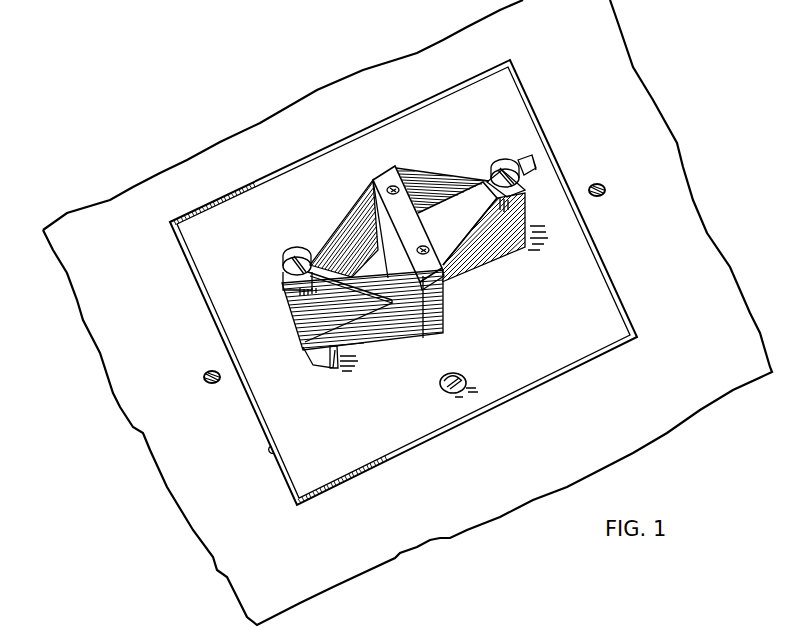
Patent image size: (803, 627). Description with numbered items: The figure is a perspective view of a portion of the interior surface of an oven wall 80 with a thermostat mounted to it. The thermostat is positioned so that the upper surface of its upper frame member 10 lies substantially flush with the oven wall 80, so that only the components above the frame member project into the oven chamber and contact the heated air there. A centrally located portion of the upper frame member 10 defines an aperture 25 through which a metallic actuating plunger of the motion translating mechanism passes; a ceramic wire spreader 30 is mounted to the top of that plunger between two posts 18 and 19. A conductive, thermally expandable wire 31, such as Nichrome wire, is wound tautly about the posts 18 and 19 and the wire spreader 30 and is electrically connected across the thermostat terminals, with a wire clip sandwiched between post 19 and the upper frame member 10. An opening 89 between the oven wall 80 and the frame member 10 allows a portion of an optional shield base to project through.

The upper frame member 10 is at (565, 330).
The post 18 is at (288, 312).
The post 19 is at (470, 212).
The aperture 25 is at (403, 303).
The ceramic wire spreader 30 is at (388, 222).
The thermally expandable wire 31 is at (425, 173).
The interior oven wall 80 is at (493, 472).
The opening 89 is at (271, 451).